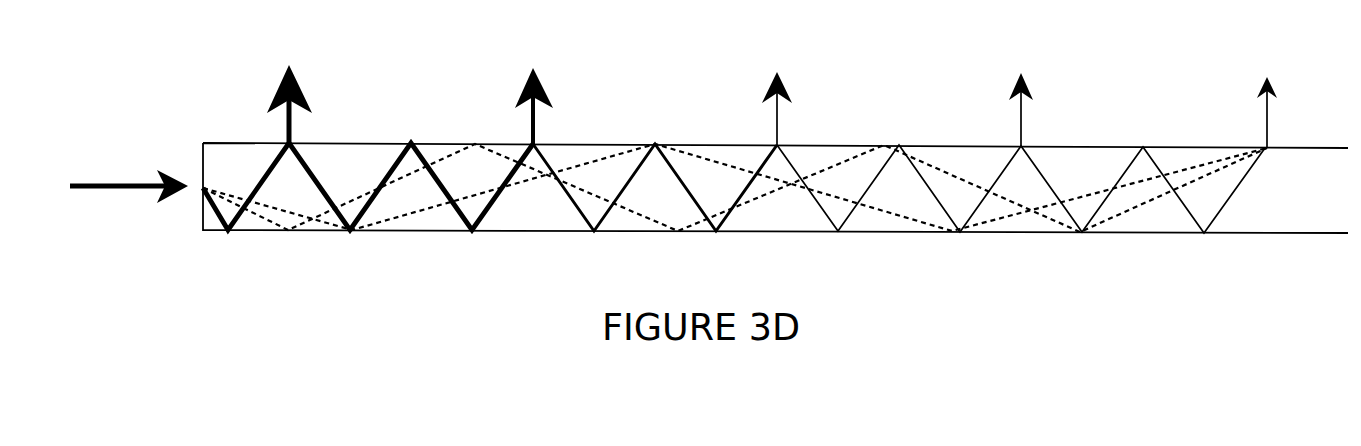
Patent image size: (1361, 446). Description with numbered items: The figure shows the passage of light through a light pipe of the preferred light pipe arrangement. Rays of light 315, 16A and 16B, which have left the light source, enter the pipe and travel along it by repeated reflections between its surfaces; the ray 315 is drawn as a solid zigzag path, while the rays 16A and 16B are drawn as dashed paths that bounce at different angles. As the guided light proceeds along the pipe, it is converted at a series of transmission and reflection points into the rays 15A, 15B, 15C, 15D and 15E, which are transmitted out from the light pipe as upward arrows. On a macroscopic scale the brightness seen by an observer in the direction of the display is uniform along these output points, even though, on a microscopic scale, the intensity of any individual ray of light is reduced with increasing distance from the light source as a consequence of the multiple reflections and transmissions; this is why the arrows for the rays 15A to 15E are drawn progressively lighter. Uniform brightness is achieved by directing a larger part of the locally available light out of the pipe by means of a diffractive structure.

The ray of light 315 is at (93, 185).
The transmitted ray 15A is at (280, 88).
The transmitted ray 15B is at (525, 92).
The transmitted ray 15C is at (785, 86).
The transmitted ray 15D is at (1030, 86).
The transmitted ray 15E is at (1275, 90).
The ray of light 16A is at (1000, 223).
The ray of light 16B is at (1097, 223).